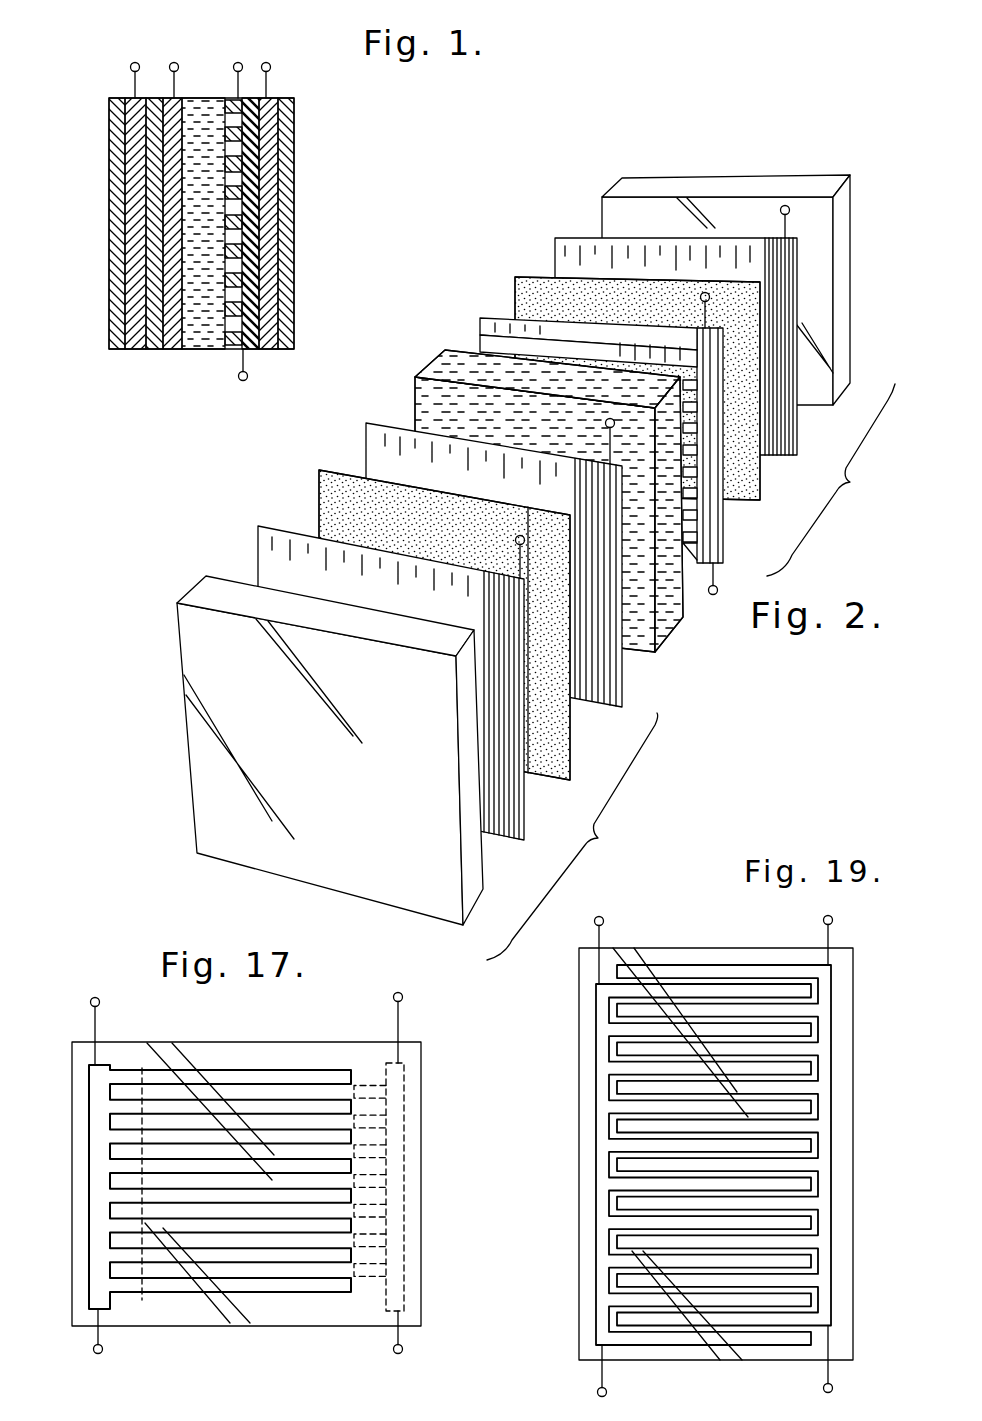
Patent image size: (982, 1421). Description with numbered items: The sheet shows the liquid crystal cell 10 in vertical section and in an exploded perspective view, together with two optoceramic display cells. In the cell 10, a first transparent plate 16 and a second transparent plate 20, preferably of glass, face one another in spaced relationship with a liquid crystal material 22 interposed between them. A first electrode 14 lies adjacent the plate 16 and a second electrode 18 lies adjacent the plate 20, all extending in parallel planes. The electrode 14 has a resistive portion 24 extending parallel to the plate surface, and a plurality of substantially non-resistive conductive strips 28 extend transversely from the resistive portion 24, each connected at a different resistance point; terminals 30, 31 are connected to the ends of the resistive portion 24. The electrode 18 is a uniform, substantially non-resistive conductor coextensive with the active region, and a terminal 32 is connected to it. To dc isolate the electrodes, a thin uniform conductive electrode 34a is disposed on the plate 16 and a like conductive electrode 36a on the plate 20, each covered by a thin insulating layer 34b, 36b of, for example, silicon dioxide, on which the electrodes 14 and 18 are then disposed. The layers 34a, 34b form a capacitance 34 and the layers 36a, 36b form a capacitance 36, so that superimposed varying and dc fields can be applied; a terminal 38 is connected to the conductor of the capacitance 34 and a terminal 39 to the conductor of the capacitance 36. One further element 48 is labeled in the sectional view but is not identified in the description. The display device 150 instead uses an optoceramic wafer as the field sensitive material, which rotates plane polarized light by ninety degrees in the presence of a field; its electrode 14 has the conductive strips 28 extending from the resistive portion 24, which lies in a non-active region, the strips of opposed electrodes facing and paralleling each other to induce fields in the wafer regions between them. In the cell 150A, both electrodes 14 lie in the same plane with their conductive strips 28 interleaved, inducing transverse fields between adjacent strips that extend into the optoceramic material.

In FIG. 1, the liquid crystal cell 10 is at (338, 55).
In FIG. 2, the liquid crystal cell 10 is at (683, 692).
In FIG. 1, the first electrode 14 is at (215, 352).
In FIG. 2, the first electrode 14 is at (455, 330).
In FIG. 19, the first electrode 14 is at (793, 957).
In FIG. 1, the first transparent plate 16 is at (294, 320).
In FIG. 2, the first transparent plate 16 is at (702, 178).
In FIG. 1, the second electrode 18 is at (175, 350).
In FIG. 2, the second electrode 18 is at (366, 425).
In FIG. 1, the second transparent plate 20 is at (113, 313).
In FIG. 2, the second transparent plate 20 is at (206, 785).
In FIG. 1, the liquid crystal material 22 is at (204, 79).
In FIG. 2, the liquid crystal material 22 is at (526, 434).
In FIG. 17, the resistive portion 24 is at (402, 1083).
In FIG. 19, the resistive portion 24 is at (832, 1021).
In FIG. 1, the conductive strips 28 is at (228, 354).
In FIG. 2, the conductive strips 28 is at (480, 334).
In FIG. 17, the conductive strips 28 is at (292, 1077).
In FIG. 19, the conductive strips 28 is at (658, 1012).
In FIG. 1, the terminal 30 is at (238, 62).
In FIG. 2, the terminal 30 is at (700, 298).
In FIG. 1, the terminal 31 is at (240, 383).
In FIG. 2, the terminal 31 is at (710, 595).
In FIG. 1, the terminal 32 is at (174, 62).
In FIG. 2, the terminal 32 is at (605, 425).
In FIG. 1, the capacitance 34 is at (270, 350).
In FIG. 2, the capacitance 34 is at (808, 441).
In FIG. 1, the conductive electrode 34a is at (275, 284).
In FIG. 2, the conductive electrode 34a is at (557, 237).
In FIG. 1, the insulating layer 34b is at (259, 261).
In FIG. 2, the insulating layer 34b is at (523, 275).
In FIG. 1, the capacitance 36 is at (155, 96).
In FIG. 2, the capacitance 36 is at (580, 773).
In FIG. 1, the conductive electrode 36a is at (137, 241).
In FIG. 2, the conductive electrode 36a is at (258, 538).
In FIG. 1, the insulating layer 36b is at (155, 203).
In FIG. 2, the insulating layer 36b is at (319, 479).
In FIG. 1, the terminal 38 is at (135, 62).
In FIG. 2, the terminal 38 is at (516, 540).
In FIG. 1, the terminal 39 is at (266, 62).
In FIG. 2, the terminal 39 is at (780, 212).
In FIG. 1, the layer 48 is at (268, 170).
In FIG. 17, the display device 150 is at (341, 1000).
In FIG. 19, the cell 150A is at (713, 929).